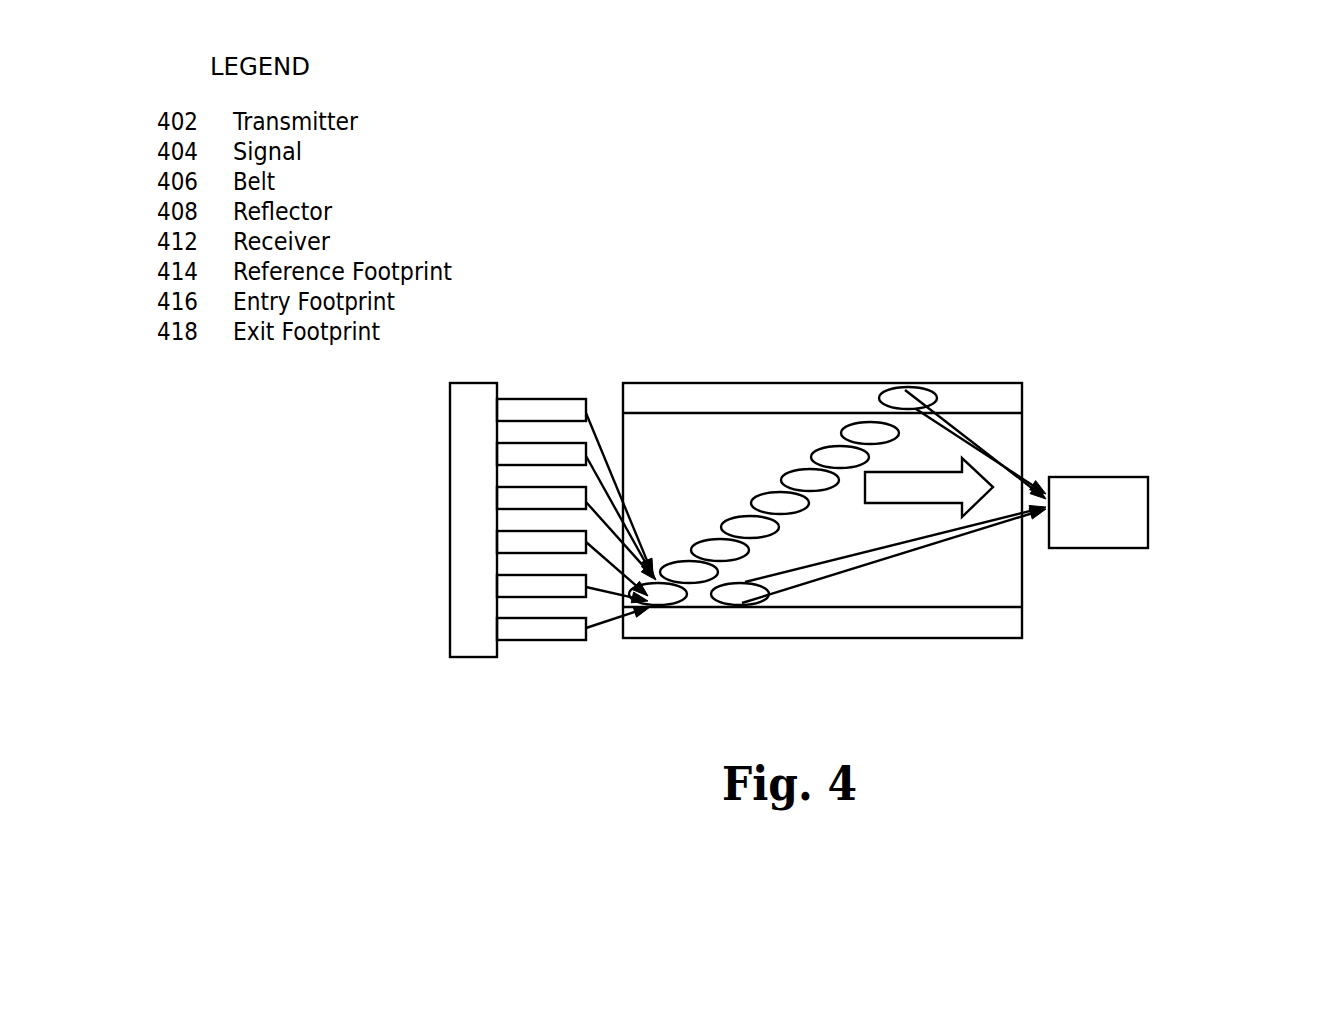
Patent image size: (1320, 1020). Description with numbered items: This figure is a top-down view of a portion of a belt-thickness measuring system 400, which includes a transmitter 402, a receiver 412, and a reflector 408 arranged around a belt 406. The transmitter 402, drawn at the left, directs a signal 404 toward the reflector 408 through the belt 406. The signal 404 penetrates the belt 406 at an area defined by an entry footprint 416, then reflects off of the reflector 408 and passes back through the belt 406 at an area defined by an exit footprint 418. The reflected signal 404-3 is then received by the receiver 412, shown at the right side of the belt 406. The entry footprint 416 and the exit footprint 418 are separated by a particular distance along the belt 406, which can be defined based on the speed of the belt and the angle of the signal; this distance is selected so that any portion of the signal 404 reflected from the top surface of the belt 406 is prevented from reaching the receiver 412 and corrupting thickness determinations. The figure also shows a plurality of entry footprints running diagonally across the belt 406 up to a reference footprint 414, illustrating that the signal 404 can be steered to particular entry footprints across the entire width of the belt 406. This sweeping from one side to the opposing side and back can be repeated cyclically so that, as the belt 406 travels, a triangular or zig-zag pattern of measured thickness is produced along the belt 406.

The system 400 is at (1067, 250).
The transmitter 402 is at (477, 528).
The signal 404 is at (601, 410).
The reflected signal 404-3 is at (869, 595).
The belt 406 is at (697, 427).
The reflector 408 is at (795, 402).
The receiver 412 is at (1148, 510).
The reference footprint 414 is at (902, 400).
The entry footprint 416 is at (666, 596).
The exit footprint 418 is at (734, 597).